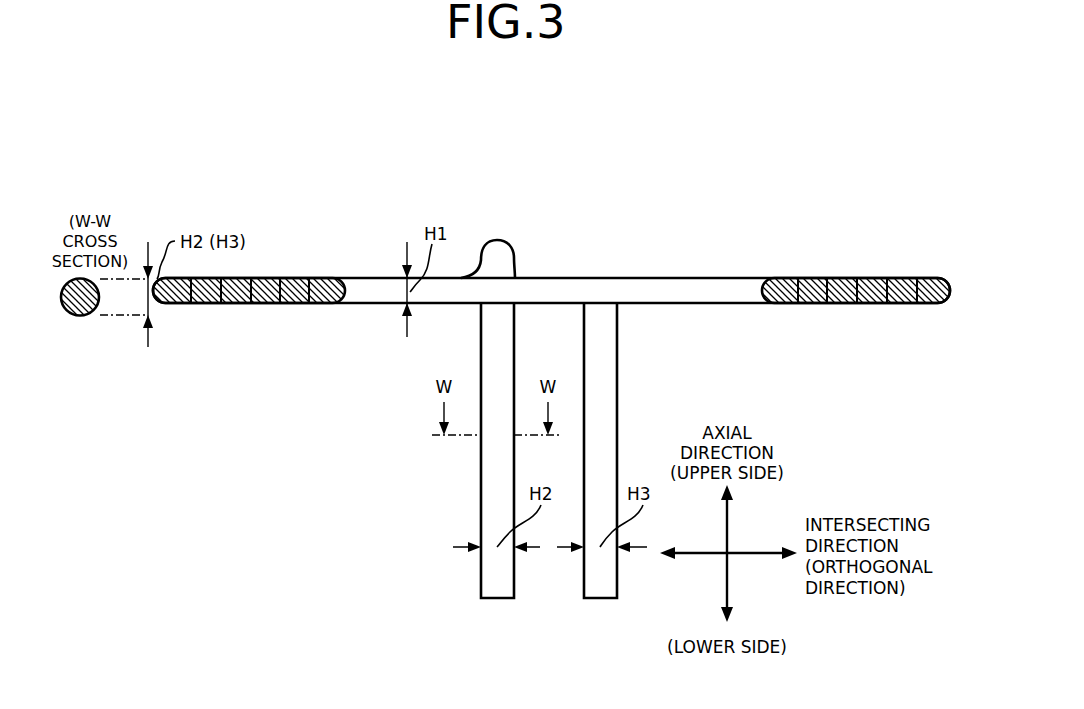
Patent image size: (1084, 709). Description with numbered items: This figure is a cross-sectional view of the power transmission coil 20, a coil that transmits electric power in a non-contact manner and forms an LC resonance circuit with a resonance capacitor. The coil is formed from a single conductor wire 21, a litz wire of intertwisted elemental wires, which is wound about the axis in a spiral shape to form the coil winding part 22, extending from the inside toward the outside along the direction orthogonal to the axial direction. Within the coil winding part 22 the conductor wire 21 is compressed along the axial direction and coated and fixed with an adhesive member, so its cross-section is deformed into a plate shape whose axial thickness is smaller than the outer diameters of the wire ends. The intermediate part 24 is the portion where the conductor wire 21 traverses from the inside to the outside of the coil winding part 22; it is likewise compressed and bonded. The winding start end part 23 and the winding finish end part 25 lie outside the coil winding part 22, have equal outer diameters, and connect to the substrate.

The power transmission coil 20 is at (626, 202).
The conductor wire 21 is at (551, 290).
The coil winding part 22 is at (776, 277).
The winding start end part 23 is at (500, 599).
The intermediate part 24 is at (494, 238).
The winding finish end part 25 is at (603, 599).